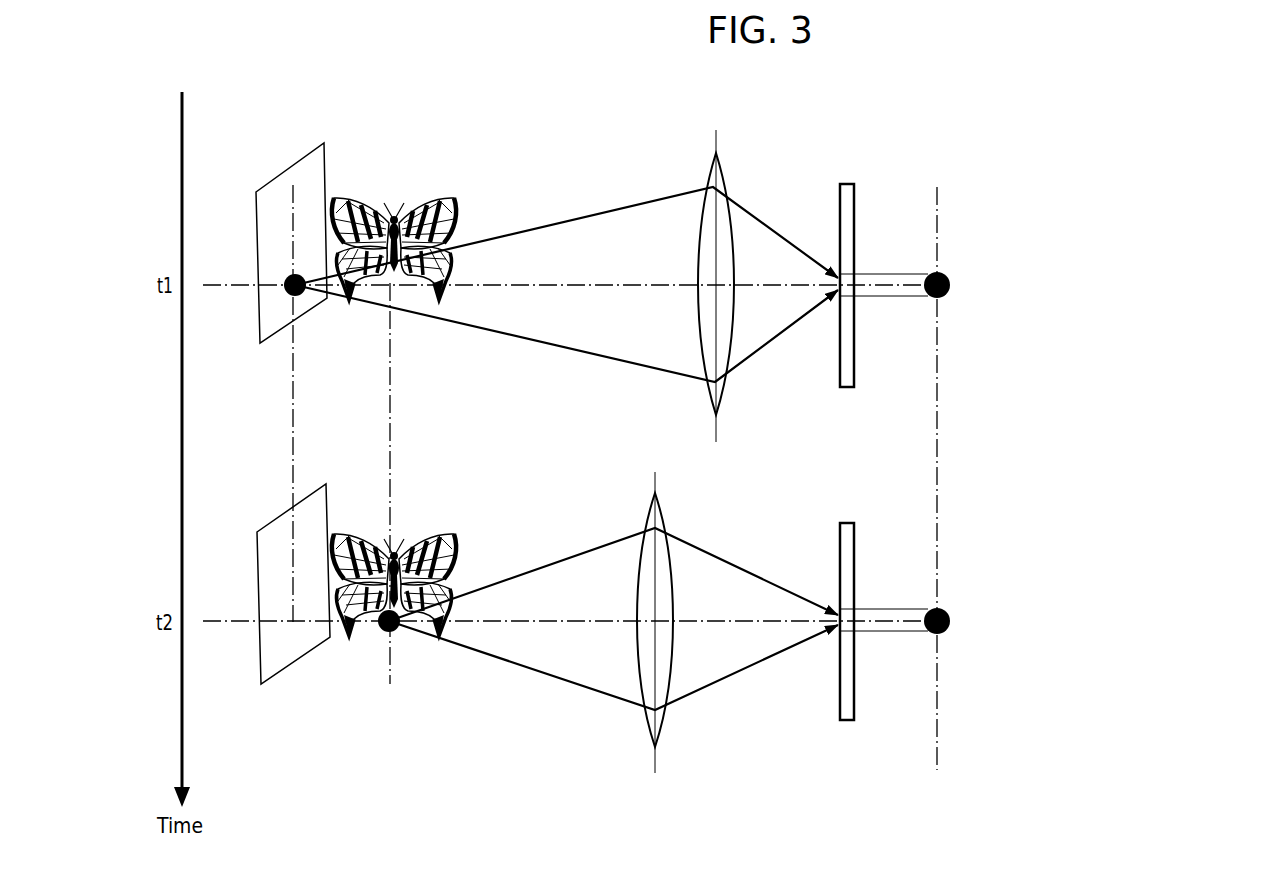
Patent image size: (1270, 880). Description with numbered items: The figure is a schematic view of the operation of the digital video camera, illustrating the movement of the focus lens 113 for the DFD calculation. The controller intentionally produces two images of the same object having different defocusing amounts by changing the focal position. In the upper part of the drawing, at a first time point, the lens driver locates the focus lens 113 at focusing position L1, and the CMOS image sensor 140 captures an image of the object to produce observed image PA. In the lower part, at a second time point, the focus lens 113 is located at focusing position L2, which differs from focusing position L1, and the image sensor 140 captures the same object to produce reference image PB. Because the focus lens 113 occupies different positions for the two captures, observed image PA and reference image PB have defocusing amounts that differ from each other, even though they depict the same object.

The focus lens 113 is at (694, 448).
The CMOS image sensor 140 is at (853, 182).
The focusing position L1 is at (716, 302).
The focusing position L2 is at (655, 637).
The observed image PA is at (944, 285).
The reference image PB is at (944, 621).